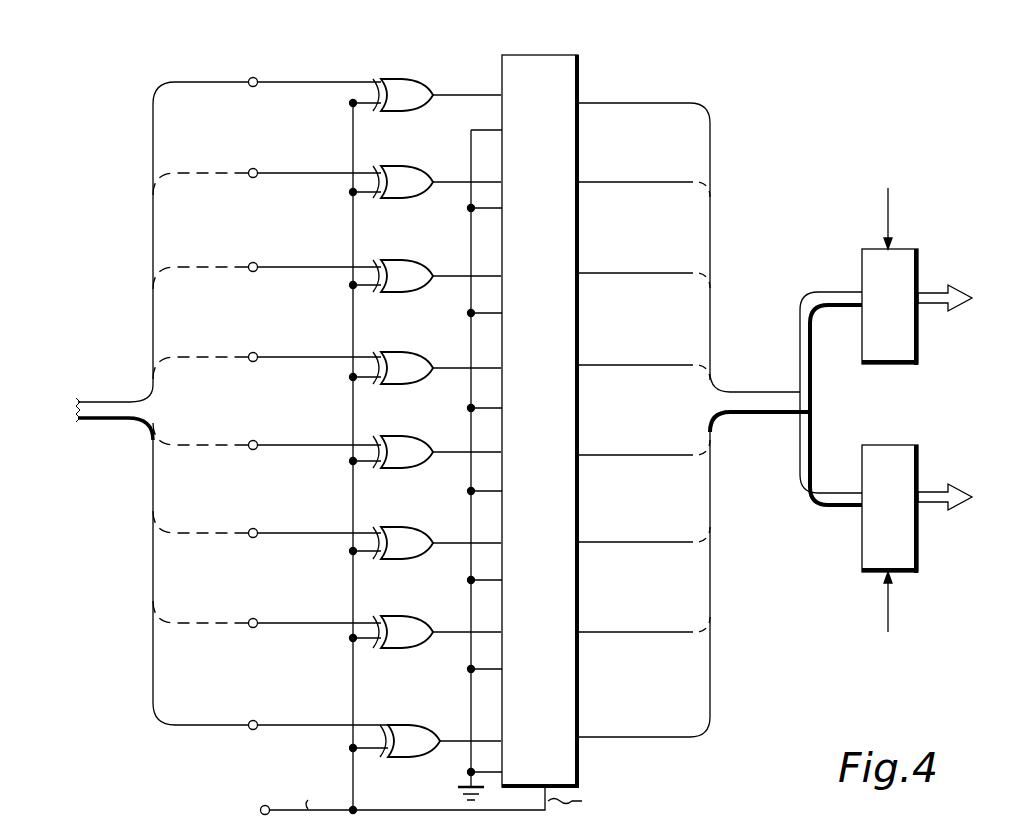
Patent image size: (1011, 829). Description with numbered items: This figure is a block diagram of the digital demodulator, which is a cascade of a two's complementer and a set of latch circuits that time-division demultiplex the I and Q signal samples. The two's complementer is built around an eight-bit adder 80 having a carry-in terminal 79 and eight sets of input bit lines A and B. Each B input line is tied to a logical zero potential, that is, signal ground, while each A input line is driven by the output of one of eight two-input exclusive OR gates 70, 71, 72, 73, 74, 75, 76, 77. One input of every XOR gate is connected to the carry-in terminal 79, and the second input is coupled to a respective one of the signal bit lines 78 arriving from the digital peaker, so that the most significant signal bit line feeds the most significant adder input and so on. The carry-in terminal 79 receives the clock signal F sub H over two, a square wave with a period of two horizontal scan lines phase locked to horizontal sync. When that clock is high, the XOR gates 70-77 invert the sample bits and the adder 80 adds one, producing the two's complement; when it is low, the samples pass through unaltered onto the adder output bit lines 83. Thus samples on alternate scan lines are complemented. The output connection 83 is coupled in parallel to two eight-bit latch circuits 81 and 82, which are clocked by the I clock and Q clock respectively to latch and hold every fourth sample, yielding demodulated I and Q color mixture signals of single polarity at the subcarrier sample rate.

The exclusive OR gate 70 is at (409, 112).
The exclusive OR gate 71 is at (413, 199).
The exclusive OR gate 72 is at (413, 293).
The exclusive OR gate 73 is at (413, 385).
The exclusive OR gate 74 is at (413, 469).
The exclusive OR gate 75 is at (413, 560).
The exclusive OR gate 76 is at (413, 649).
The exclusive OR gate 77 is at (416, 758).
The signal bit lines 78 is at (131, 415).
The Cin terminal 79 is at (280, 809).
The adder 80 is at (575, 768).
The latch circuit 81 is at (893, 359).
The latch circuit 82 is at (912, 548).
The adder output bit lines 83 is at (771, 393).